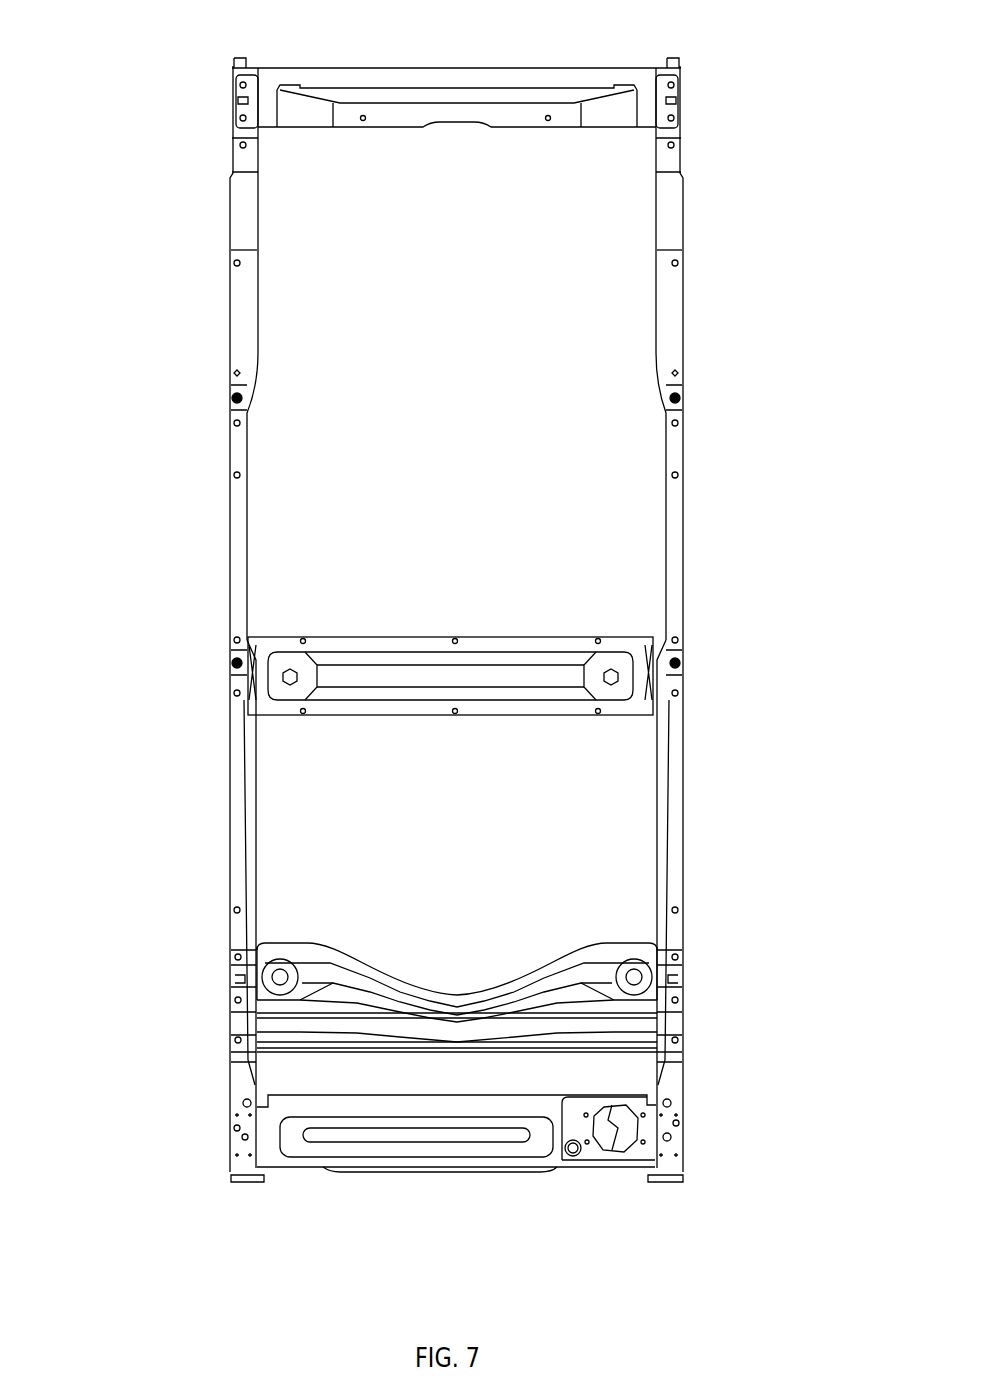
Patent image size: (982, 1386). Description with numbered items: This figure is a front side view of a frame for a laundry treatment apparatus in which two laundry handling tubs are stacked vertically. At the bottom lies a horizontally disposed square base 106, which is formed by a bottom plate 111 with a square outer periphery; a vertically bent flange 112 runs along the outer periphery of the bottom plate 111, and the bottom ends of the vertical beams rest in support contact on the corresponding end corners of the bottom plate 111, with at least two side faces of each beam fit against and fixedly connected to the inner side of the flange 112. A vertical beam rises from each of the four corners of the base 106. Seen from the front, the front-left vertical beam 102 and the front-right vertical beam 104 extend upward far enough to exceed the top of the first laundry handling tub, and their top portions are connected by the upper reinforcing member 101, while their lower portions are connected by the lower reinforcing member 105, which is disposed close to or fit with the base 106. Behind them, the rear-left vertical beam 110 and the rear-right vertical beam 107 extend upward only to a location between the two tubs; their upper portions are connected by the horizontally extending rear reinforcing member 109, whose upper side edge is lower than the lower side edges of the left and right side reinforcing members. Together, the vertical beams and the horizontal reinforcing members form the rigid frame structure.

The upper reinforcing member 101 is at (531, 95).
The front-left vertical beam 102 is at (245, 457).
The front-right vertical beam 104 is at (676, 807).
The lower reinforcing member 105 is at (607, 1007).
The base 106 is at (650, 1160).
The rear-right vertical beam 107 is at (682, 962).
The rear reinforcing member 109 is at (560, 680).
The rear-left vertical beam 110 is at (250, 800).
The bottom plate 111 is at (487, 1173).
The flange 112 is at (535, 1142).